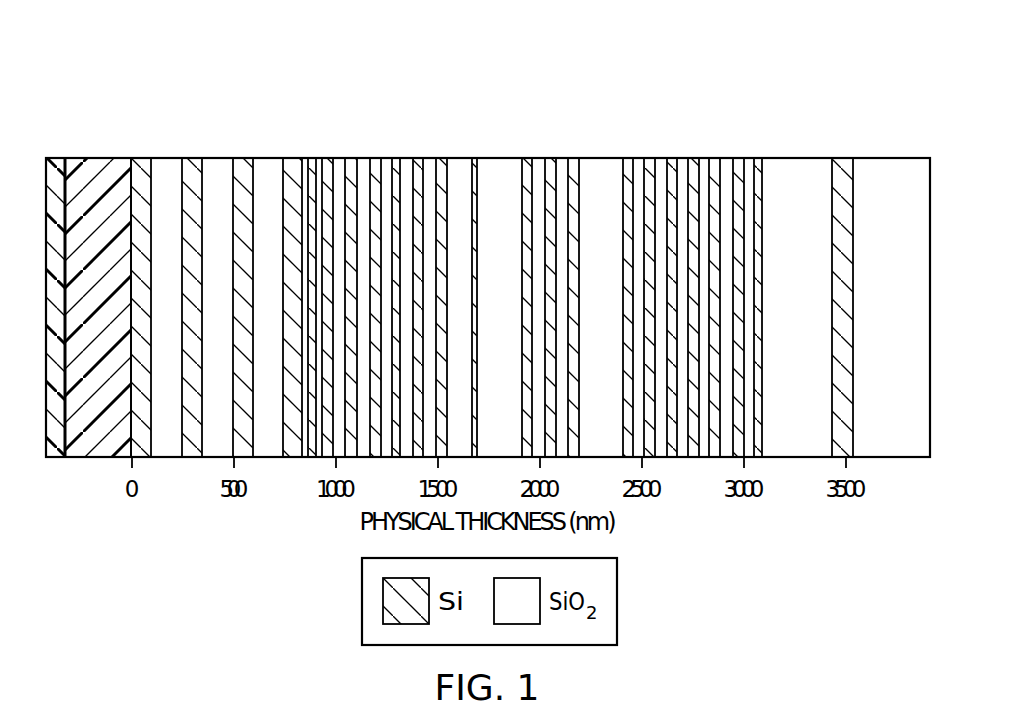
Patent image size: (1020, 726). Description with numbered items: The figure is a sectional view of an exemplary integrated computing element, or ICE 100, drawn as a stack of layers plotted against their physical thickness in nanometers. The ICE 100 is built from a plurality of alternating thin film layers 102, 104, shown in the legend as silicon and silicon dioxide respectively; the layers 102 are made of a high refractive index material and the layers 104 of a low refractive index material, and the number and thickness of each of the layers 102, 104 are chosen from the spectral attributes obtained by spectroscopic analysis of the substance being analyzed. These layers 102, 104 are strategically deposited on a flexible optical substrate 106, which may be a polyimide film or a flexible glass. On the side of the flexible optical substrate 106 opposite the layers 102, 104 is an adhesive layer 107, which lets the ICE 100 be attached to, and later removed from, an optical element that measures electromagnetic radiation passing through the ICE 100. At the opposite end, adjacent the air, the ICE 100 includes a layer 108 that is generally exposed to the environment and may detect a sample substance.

The integrated computing element 100 is at (646, 60).
The thin film layer 102 is at (141, 170).
The thin film layer 104 is at (388, 168).
The flexible optical substrate 106 is at (97, 170).
The adhesive layer 107 is at (54, 448).
The layer 108 is at (843, 168).